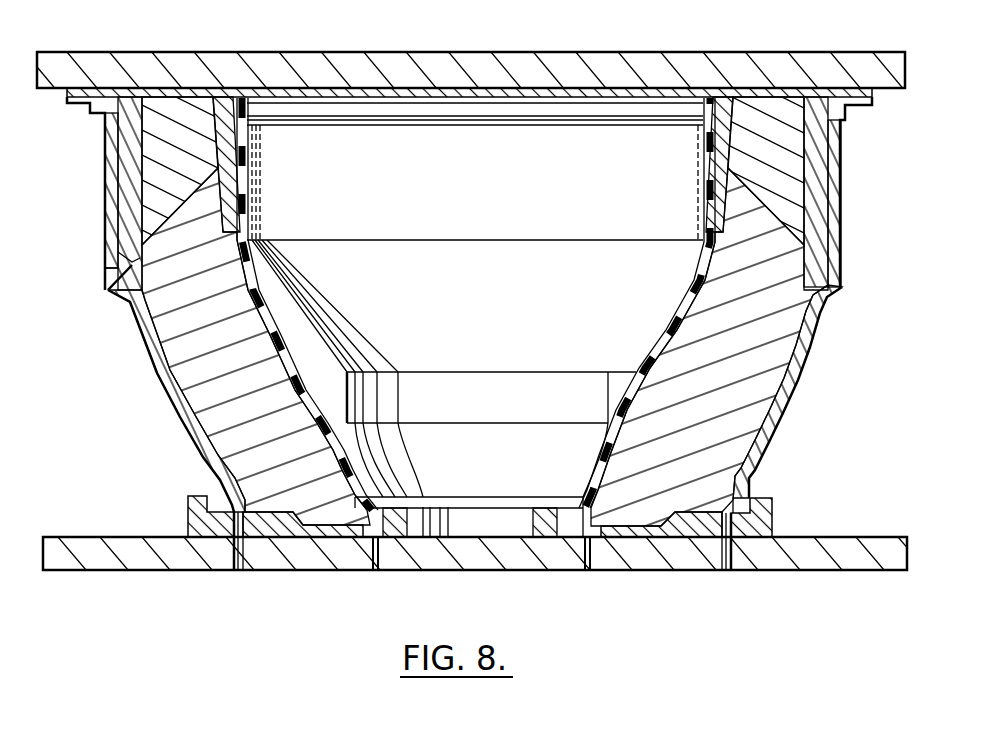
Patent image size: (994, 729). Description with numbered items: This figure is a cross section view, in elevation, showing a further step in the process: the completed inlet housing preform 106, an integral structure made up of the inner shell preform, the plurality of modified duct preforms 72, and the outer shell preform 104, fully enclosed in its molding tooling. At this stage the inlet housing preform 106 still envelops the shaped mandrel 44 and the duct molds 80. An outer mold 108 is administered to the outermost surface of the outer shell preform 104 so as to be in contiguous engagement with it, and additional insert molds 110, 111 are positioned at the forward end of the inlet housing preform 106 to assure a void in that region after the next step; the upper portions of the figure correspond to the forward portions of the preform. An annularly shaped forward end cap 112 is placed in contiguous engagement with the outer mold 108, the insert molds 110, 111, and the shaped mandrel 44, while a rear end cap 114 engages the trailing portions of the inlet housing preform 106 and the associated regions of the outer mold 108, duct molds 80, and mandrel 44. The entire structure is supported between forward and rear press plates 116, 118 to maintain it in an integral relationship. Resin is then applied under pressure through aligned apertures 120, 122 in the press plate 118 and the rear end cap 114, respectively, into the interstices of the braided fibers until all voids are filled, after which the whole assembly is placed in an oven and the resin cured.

The shaped mandrel 44 is at (267, 302).
The modified duct preform 72 is at (236, 10).
The duct mold 80 is at (393, 372).
The outer shell preform 104 is at (182, 387).
The inlet housing preform 106 is at (802, 423).
The outer mold 108 is at (117, 270).
The insert mold 110 is at (165, 163).
The insert mold 111 is at (127, 137).
The forward end cap 112 is at (235, 90).
The rear end cap 114 is at (190, 512).
The forward press plate 116 is at (597, 63).
The rear press plate 118 is at (822, 558).
The aperture 120 is at (227, 560).
The aperture 122 is at (257, 547).